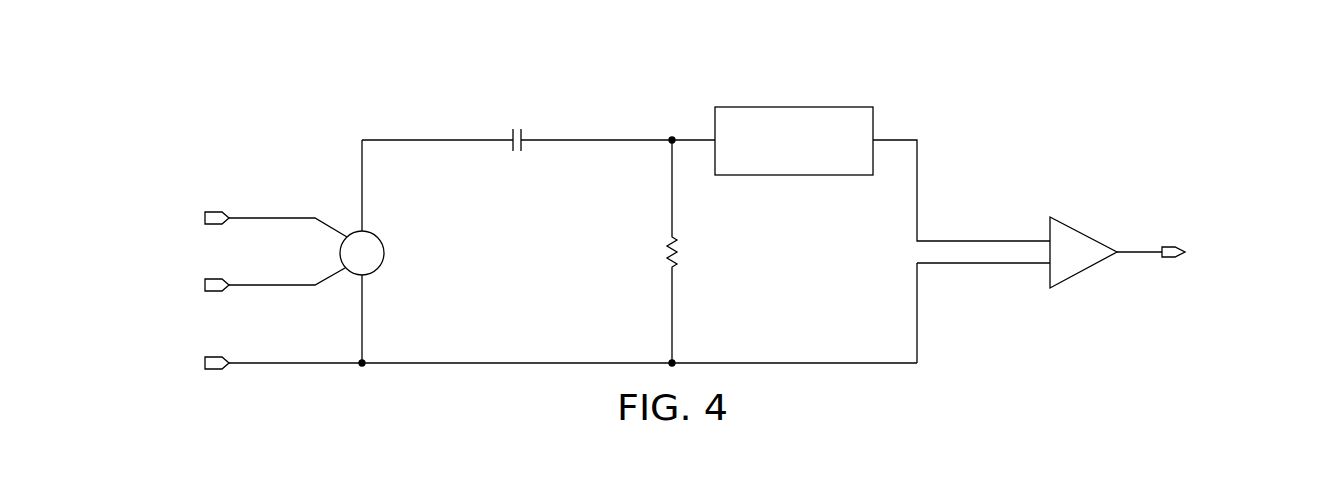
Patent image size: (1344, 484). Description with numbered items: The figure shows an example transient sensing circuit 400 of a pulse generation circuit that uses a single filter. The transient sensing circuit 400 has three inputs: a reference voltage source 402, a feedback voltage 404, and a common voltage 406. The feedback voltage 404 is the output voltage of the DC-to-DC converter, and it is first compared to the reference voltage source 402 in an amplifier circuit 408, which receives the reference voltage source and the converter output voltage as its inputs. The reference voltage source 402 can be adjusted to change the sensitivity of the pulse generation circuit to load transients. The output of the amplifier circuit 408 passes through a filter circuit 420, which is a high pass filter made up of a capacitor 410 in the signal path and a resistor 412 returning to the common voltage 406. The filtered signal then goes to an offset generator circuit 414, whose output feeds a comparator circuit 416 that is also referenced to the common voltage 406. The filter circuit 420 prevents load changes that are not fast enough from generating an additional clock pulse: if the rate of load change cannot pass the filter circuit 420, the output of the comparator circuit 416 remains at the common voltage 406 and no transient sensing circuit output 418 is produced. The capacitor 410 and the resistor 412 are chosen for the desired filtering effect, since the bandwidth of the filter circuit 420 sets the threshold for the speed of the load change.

The transient sensing circuit 400 is at (1040, 73).
The reference voltage source 402 is at (272, 216).
The feedback voltage 404 is at (272, 290).
The common voltage 406 is at (293, 368).
The amplifier circuit 408 is at (374, 271).
The capacitor 410 is at (513, 154).
The resistor 412 is at (665, 254).
The offset generator circuit 414 is at (795, 107).
The comparator circuit 416 is at (1085, 232).
The transient sensing circuit output 418 is at (1163, 259).
The filter circuit 420 is at (607, 97).